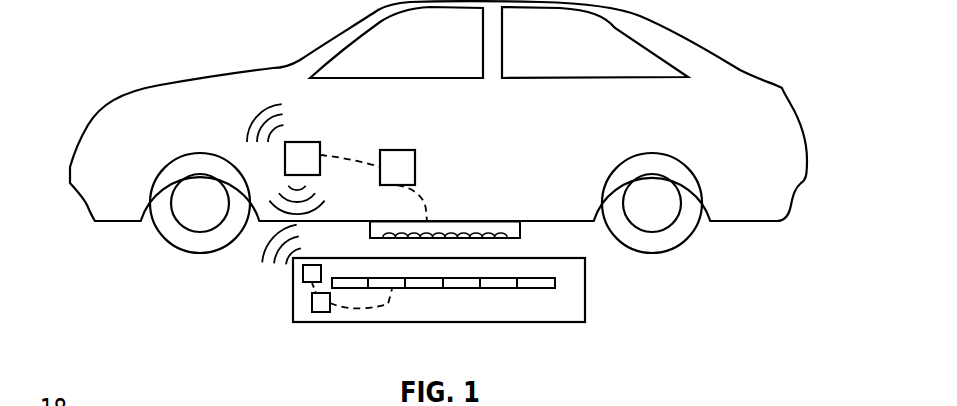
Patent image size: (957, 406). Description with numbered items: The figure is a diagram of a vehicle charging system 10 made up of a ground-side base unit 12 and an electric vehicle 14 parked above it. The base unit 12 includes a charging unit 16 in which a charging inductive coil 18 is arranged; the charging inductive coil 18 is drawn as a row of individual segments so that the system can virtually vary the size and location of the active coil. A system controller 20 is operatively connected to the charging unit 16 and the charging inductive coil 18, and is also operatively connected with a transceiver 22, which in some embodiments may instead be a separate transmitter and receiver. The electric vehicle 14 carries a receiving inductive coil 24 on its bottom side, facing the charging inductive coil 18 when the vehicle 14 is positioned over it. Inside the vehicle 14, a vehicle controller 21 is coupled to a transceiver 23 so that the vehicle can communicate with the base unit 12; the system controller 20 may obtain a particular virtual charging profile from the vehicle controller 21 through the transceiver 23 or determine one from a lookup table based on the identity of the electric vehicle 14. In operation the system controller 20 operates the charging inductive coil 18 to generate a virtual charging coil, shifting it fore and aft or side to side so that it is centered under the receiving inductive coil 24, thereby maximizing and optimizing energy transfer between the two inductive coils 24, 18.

The vehicle charging system 10 is at (100, 42).
The base unit 12 is at (220, 302).
The electric vehicle 14 is at (762, 98).
The charging unit 16 is at (523, 322).
The charging inductive coil 18 is at (555, 283).
The system controller 20 is at (310, 303).
The vehicle controller 21 is at (416, 165).
The transceiver 22 is at (302, 273).
The transceiver 23 is at (322, 147).
The receiving inductive coil 24 is at (520, 228).